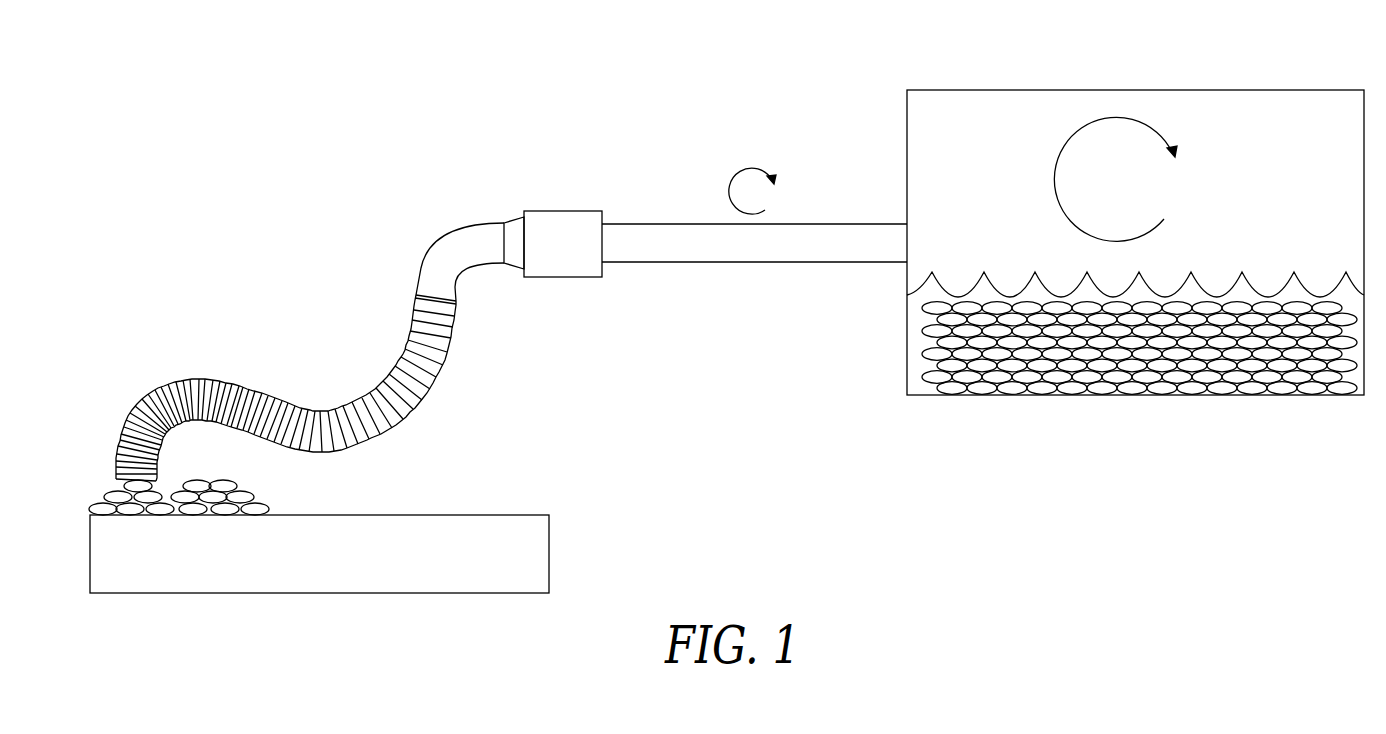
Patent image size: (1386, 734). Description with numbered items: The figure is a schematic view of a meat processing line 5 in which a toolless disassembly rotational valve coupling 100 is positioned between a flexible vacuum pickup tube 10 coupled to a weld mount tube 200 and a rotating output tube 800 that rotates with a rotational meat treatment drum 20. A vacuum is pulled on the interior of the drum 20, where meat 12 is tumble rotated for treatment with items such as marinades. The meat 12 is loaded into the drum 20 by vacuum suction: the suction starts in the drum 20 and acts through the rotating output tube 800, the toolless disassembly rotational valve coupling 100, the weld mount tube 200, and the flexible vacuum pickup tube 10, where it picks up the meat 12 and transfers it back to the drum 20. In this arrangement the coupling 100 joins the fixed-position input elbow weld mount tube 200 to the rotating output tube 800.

The meat processing line 5 is at (418, 98).
The flexible vacuum pickup tube 10 is at (247, 387).
The meat 12 is at (253, 497).
The rotational meat treatment drum 20 is at (952, 90).
The toolless disassembly rotational valve coupling 100 is at (554, 211).
The weld mount tube 200 is at (432, 242).
The rotating output tube 800 is at (853, 224).